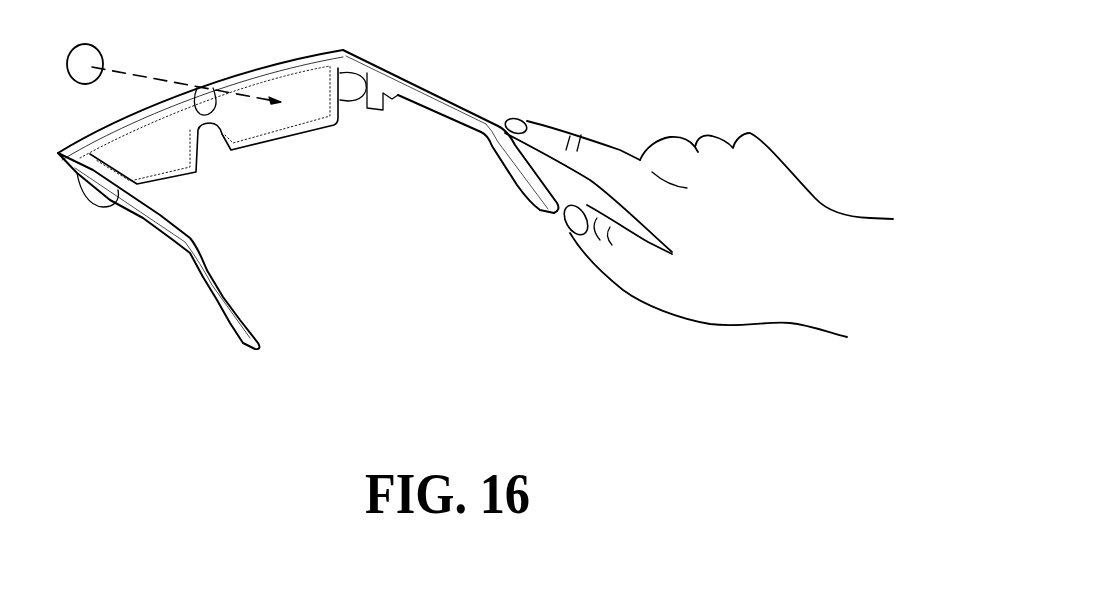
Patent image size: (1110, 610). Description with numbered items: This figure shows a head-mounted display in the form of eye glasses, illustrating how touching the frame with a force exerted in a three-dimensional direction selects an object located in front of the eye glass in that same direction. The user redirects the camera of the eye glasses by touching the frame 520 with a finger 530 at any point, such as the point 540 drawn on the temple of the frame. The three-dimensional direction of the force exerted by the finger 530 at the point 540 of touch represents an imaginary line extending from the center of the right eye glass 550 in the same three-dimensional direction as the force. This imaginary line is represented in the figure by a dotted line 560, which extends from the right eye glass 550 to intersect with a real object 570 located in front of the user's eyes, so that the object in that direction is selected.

The frame 520 is at (423, 106).
The finger 530 is at (636, 156).
The point 540 is at (492, 148).
The right eye glass 550 is at (280, 103).
The dotted line 560 is at (187, 84).
The real object 570 is at (66, 74).